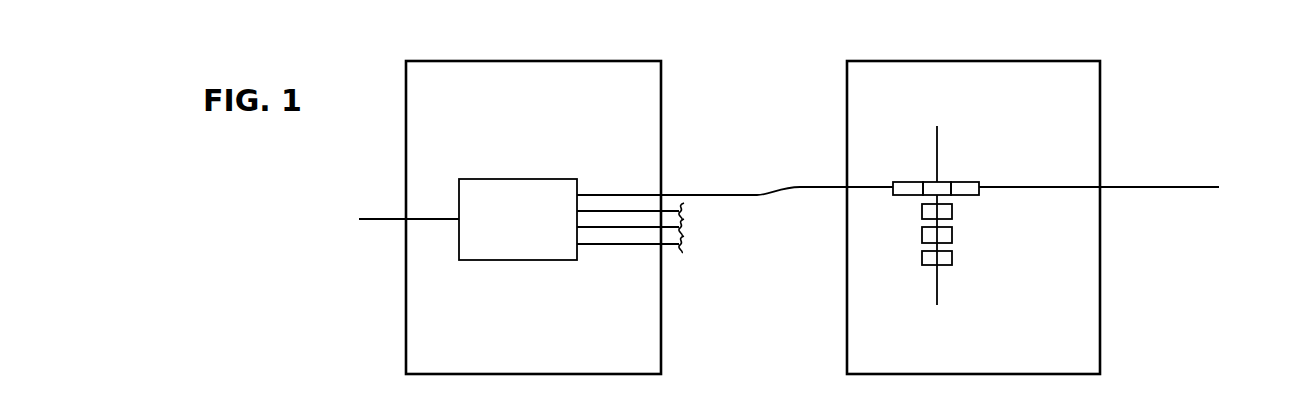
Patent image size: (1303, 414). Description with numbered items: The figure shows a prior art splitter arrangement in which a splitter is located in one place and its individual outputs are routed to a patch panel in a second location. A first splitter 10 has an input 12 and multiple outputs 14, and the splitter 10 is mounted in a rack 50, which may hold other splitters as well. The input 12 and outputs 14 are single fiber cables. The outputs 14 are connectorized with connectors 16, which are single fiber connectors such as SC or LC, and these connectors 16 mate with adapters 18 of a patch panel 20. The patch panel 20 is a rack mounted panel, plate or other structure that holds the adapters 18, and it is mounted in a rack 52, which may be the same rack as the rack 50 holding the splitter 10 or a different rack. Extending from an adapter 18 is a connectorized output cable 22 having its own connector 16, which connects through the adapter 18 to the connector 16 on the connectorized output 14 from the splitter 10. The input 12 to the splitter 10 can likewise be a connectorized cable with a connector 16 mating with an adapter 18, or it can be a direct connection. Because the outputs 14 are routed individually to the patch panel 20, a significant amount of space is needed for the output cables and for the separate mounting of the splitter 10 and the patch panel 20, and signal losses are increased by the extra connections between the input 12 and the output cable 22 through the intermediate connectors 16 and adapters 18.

The splitter 10 is at (498, 178).
The input 12 is at (390, 219).
The outputs 14 is at (612, 195).
The connectors 16 is at (910, 182).
The adapters 18 is at (943, 182).
The patch panel 20 is at (937, 139).
The connectorized output cable 22 is at (1162, 187).
The rack 50 is at (535, 61).
The rack 52 is at (985, 61).